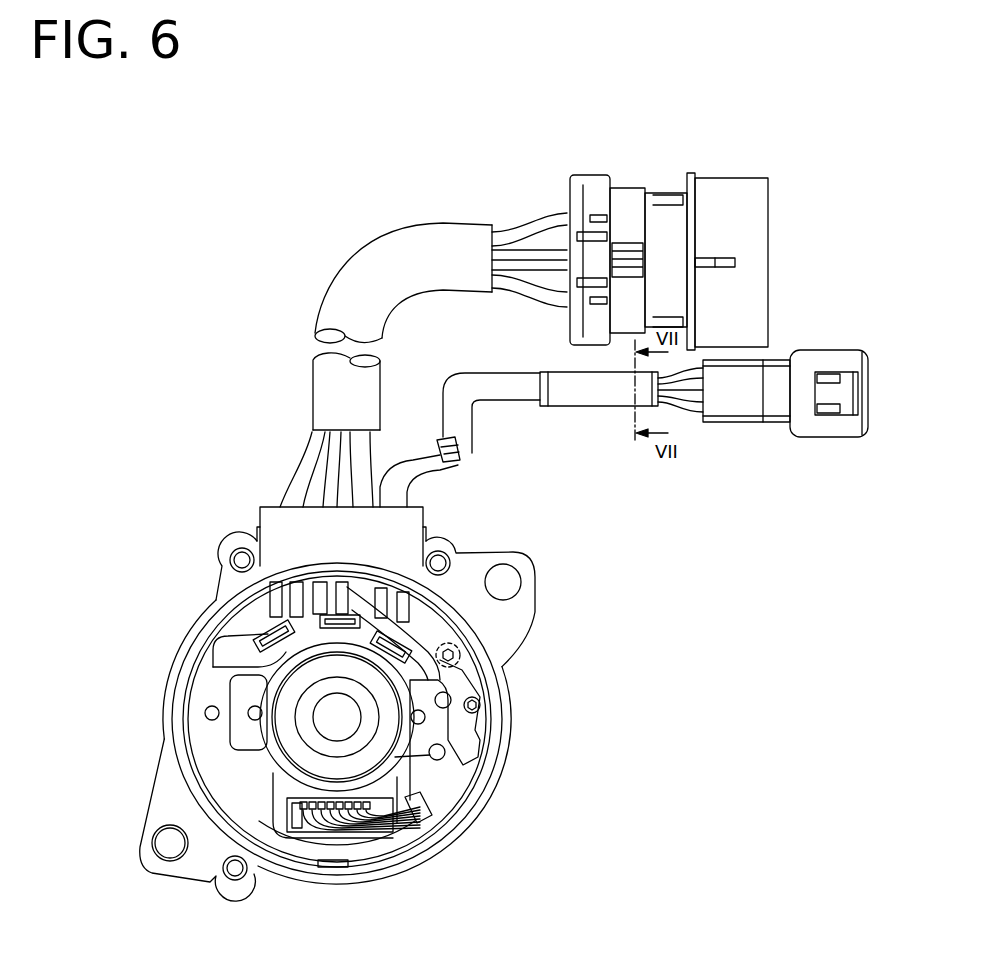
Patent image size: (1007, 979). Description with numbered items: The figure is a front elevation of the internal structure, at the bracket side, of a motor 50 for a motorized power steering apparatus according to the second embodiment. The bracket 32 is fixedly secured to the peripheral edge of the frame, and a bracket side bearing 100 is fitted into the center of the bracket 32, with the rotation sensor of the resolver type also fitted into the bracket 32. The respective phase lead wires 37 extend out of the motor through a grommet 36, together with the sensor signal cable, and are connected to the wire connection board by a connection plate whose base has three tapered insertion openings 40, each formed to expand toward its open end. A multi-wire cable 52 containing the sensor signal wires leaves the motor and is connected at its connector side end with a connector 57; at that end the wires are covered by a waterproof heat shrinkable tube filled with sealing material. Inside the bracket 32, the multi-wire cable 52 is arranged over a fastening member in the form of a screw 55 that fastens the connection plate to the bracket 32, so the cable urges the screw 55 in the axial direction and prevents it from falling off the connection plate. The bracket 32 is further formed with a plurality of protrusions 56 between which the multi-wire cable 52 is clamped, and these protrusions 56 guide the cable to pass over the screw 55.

The bracket 32 is at (387, 730).
The grommet 36 is at (275, 510).
The respective phase lead wires 37 is at (302, 467).
The tapered insertion openings 40 is at (270, 627).
The motor 50 is at (237, 379).
The multi-wire cable 52 is at (598, 403).
The screw 55 is at (460, 655).
The protrusions 56 is at (446, 698).
The connector 57 is at (722, 425).
The bracket side bearing 100 is at (357, 738).